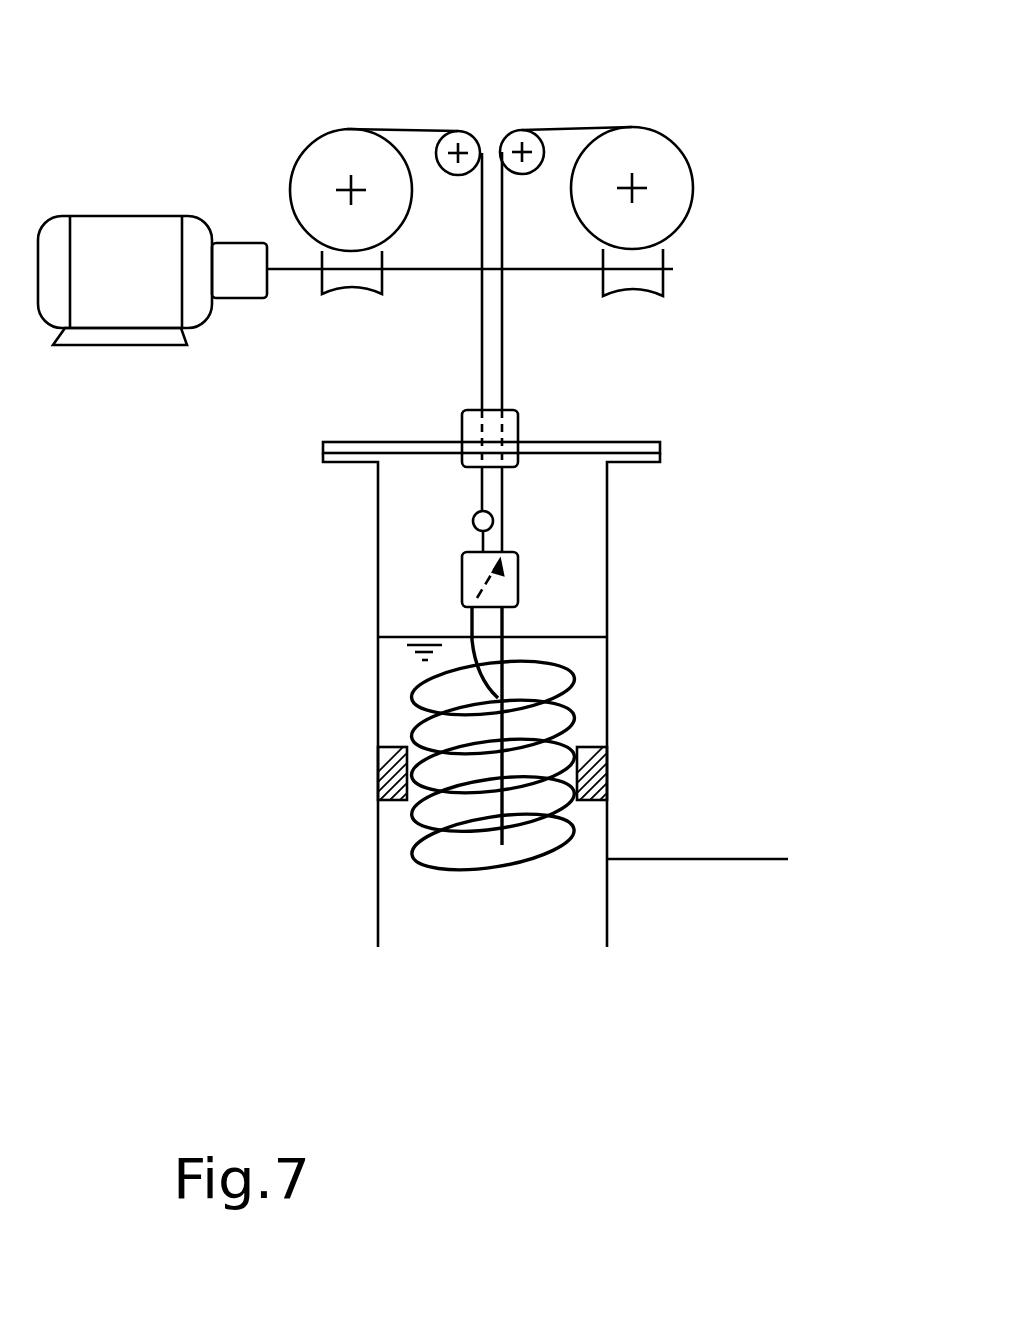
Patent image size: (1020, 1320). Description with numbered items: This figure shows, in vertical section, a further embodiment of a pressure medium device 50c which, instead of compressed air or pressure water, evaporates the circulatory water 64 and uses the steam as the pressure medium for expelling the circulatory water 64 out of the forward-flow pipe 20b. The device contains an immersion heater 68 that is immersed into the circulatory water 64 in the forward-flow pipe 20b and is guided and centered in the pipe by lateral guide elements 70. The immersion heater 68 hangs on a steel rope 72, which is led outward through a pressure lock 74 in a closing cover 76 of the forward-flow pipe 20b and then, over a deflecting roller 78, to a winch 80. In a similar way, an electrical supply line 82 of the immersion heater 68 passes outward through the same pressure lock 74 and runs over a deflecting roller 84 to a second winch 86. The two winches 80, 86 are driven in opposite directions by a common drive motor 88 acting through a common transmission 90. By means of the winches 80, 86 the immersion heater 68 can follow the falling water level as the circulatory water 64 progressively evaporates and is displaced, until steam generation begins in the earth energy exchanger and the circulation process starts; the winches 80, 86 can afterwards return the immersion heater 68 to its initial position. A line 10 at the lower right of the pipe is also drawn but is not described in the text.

The outlet conduit 10 is at (748, 857).
The forward-flow pipe 20b is at (378, 589).
The pressure medium device 50c is at (755, 316).
The circulatory water 64 is at (582, 650).
The immersion heater 68 is at (527, 845).
The lateral guide elements 70 is at (378, 782).
The steel rope 72 is at (481, 370).
The pressure lock 74 is at (508, 428).
The closing cover 76 is at (413, 441).
The deflecting roller 78 is at (461, 131).
The winch 80 is at (331, 163).
The electrical supply line 82 is at (503, 360).
The deflecting roller 84 is at (520, 130).
The winch 86 is at (643, 160).
The drive motor 88 is at (136, 253).
The transmission 90 is at (312, 320).